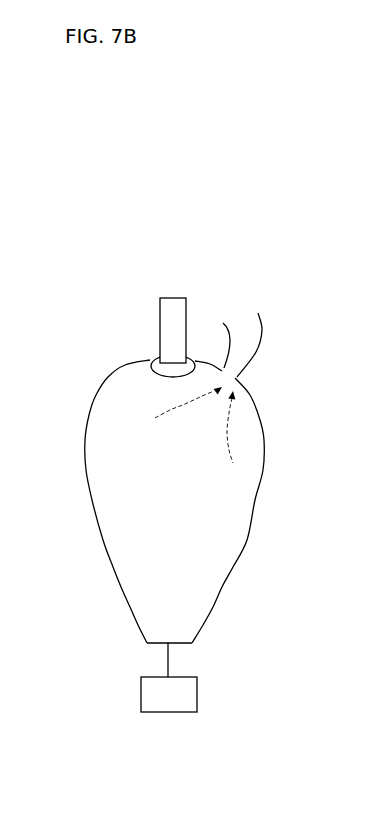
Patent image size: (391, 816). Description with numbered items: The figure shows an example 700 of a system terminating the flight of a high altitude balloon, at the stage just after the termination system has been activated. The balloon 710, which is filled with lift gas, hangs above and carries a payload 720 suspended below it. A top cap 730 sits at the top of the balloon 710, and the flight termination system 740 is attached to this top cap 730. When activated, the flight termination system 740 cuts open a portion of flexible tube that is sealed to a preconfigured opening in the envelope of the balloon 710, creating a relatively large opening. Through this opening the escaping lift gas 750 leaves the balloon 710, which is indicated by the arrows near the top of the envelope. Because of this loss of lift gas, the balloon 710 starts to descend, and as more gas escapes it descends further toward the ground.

The balloon system 700 is at (305, 43).
The balloon 710 is at (262, 548).
The payload 720 is at (141, 692).
The top cap 730 is at (153, 361).
The flight termination system 740 is at (187, 302).
The escaping lift gas 750 is at (227, 432).